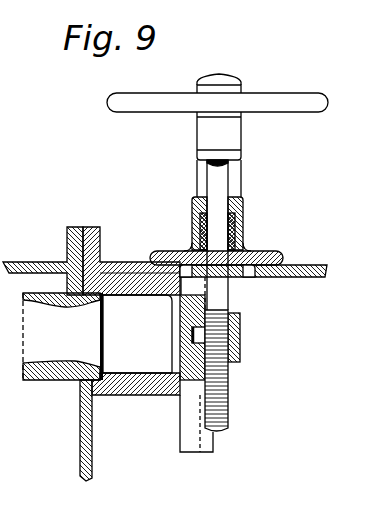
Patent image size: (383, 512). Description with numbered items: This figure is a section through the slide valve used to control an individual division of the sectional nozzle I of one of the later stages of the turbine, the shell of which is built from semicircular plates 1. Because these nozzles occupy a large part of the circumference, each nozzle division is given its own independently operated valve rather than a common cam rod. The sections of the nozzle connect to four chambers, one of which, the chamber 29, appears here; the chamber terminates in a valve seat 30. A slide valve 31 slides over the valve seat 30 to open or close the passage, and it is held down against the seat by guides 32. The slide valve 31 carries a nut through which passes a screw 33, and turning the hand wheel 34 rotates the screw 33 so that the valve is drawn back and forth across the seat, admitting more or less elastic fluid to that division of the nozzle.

The semicircular plates 1 is at (136, 256).
The sectional nozzle I is at (62, 336).
The chamber 29 is at (137, 334).
The valve seat 30 is at (178, 302).
The slide valve 31 is at (180, 355).
The guides 32 is at (194, 439).
The screw 33 is at (208, 428).
The hand wheel 34 is at (217, 133).